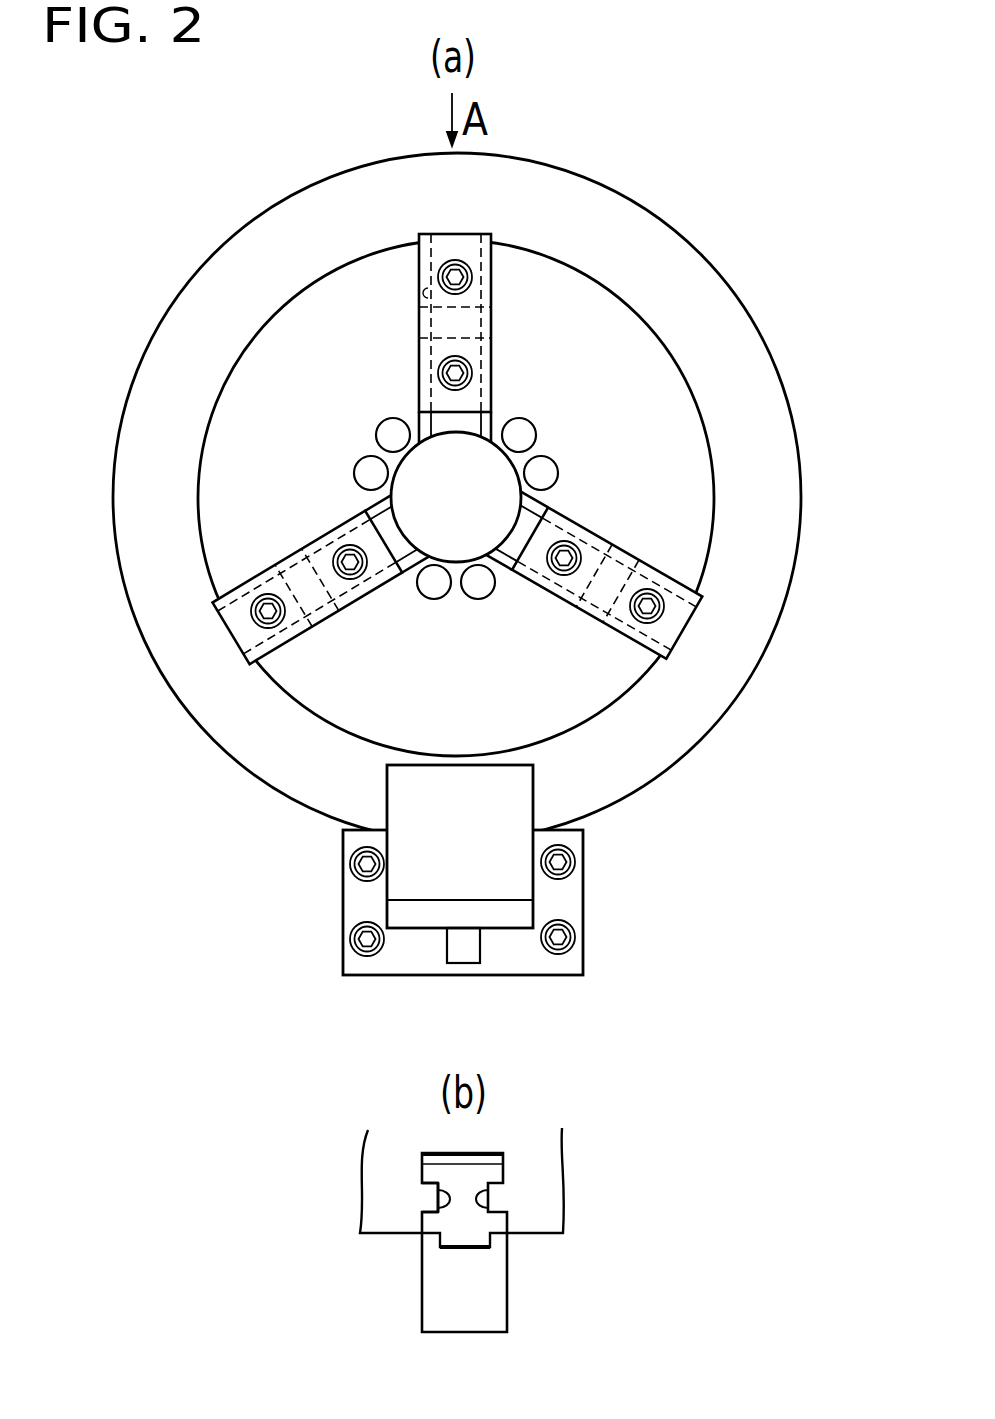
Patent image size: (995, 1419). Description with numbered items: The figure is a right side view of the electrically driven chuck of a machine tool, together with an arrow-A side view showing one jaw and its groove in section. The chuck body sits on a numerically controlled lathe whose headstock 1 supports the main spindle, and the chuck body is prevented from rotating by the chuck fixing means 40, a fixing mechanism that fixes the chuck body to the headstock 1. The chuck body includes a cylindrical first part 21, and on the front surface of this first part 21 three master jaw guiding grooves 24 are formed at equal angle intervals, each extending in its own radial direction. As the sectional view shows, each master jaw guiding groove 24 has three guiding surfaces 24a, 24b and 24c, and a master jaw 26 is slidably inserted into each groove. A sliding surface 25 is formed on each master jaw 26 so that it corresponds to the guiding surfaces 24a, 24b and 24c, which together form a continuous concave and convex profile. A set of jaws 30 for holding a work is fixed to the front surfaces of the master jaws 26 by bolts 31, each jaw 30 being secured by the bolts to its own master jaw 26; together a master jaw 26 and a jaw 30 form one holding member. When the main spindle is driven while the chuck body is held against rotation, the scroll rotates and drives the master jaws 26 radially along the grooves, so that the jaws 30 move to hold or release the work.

The headstock 1 is at (716, 348).
The first part 21 is at (262, 352).
The master jaw guiding groove 24 is at (428, 302).
The guiding surface 24a is at (430, 1226).
The guiding surface 24b is at (440, 1193).
The guiding surface 24c is at (423, 1181).
The sliding surface 25 is at (490, 1187).
The master jaw 26 is at (452, 1222).
The jaw 30 is at (455, 246).
The bolt 31 is at (456, 360).
The chuck fixing means 40 is at (606, 837).